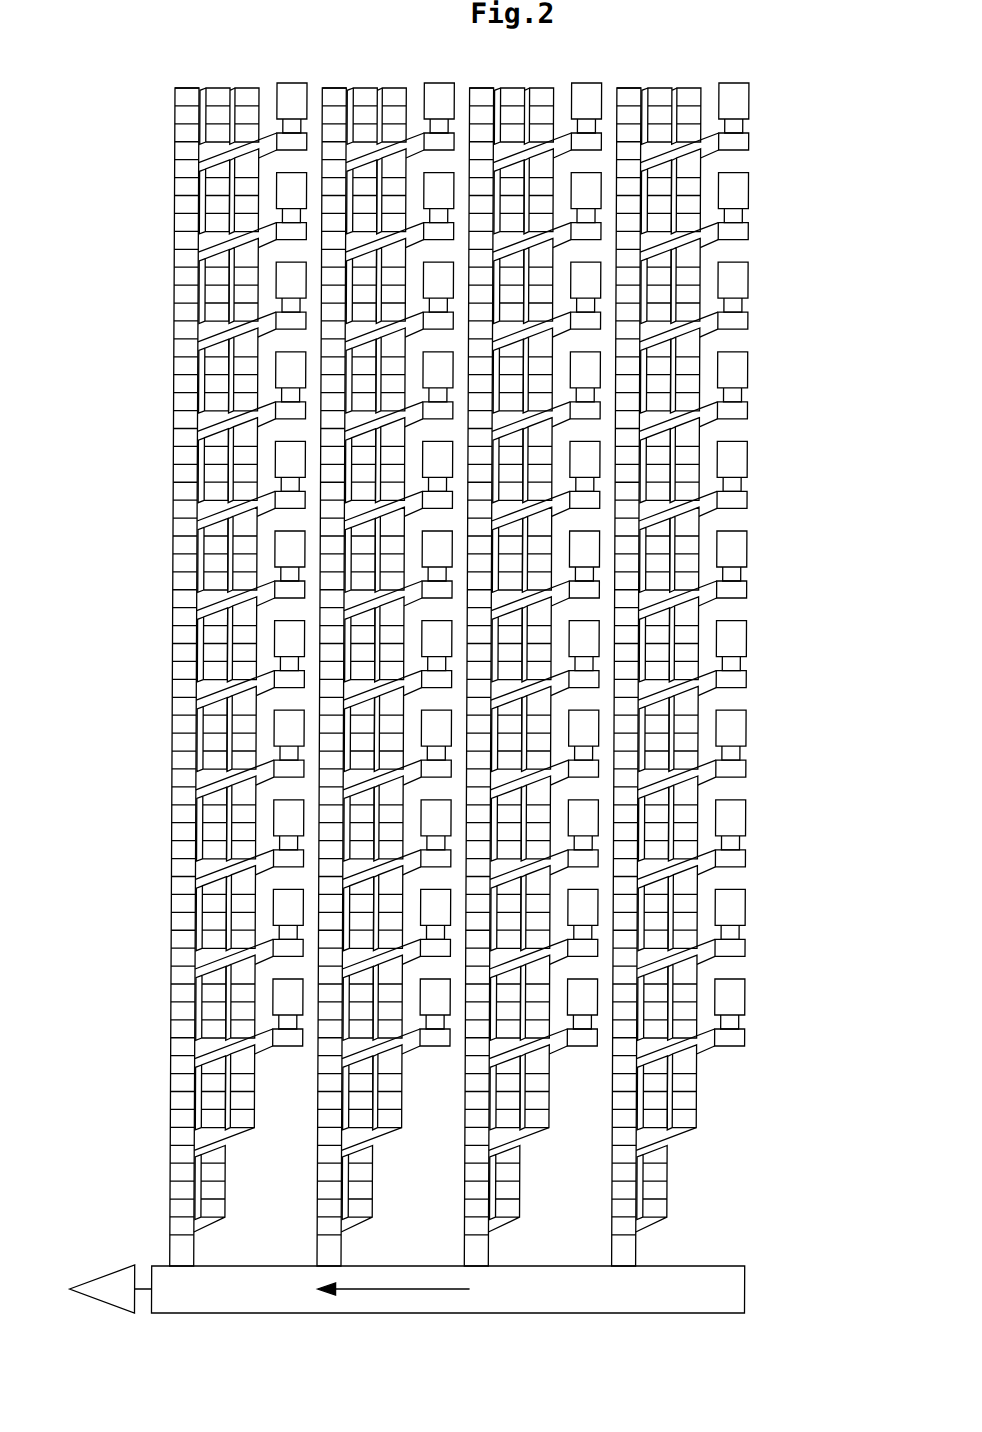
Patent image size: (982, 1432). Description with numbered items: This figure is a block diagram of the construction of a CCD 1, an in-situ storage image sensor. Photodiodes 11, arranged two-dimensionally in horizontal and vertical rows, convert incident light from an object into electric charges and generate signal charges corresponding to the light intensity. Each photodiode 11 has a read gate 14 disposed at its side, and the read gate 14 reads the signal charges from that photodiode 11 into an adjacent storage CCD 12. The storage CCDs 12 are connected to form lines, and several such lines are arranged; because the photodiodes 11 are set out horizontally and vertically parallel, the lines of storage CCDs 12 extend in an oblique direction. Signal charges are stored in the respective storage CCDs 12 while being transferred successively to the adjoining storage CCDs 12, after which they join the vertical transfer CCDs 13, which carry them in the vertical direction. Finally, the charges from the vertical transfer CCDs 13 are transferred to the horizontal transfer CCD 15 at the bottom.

The CCD 1 is at (159, 476).
The photodiode 11 is at (521, 545).
The storage CCD 12 is at (456, 643).
The vertical transfer CCD 13 is at (385, 662).
The read gate 14 is at (543, 581).
The horizontal transfer CCD 15 is at (746, 1285).